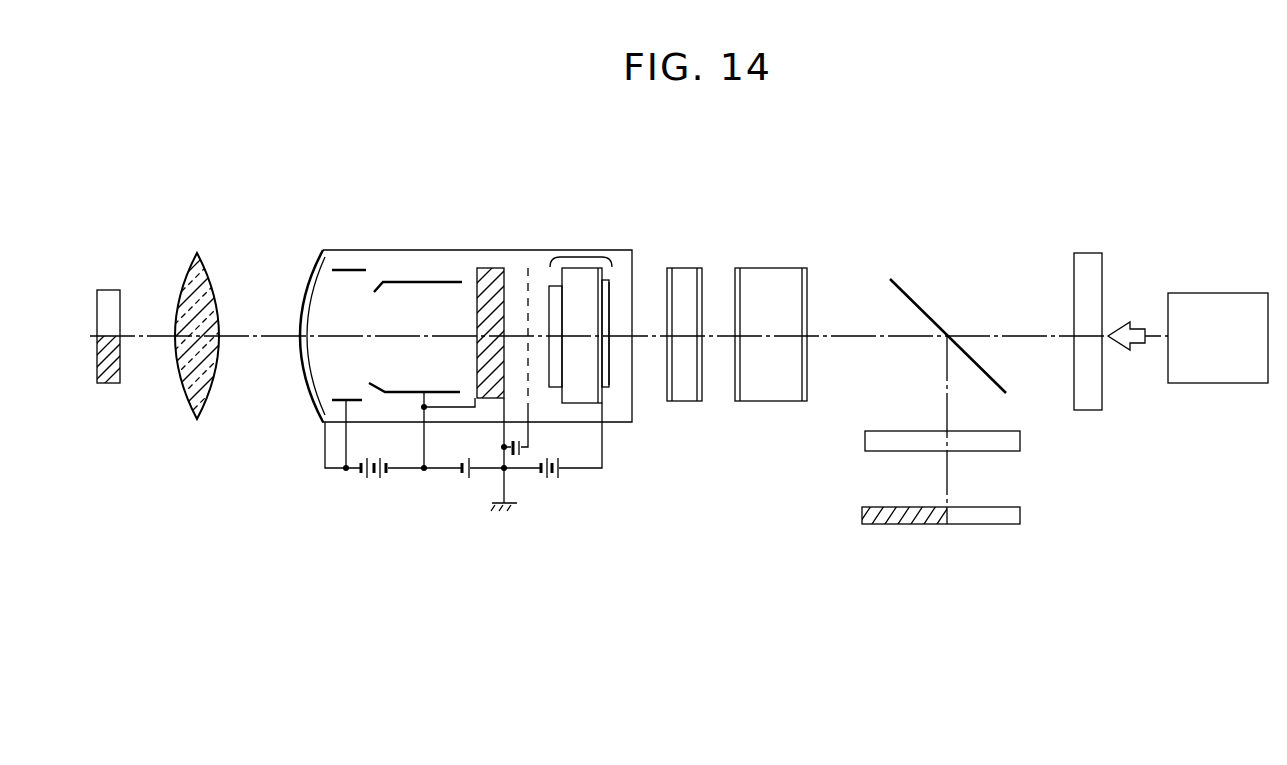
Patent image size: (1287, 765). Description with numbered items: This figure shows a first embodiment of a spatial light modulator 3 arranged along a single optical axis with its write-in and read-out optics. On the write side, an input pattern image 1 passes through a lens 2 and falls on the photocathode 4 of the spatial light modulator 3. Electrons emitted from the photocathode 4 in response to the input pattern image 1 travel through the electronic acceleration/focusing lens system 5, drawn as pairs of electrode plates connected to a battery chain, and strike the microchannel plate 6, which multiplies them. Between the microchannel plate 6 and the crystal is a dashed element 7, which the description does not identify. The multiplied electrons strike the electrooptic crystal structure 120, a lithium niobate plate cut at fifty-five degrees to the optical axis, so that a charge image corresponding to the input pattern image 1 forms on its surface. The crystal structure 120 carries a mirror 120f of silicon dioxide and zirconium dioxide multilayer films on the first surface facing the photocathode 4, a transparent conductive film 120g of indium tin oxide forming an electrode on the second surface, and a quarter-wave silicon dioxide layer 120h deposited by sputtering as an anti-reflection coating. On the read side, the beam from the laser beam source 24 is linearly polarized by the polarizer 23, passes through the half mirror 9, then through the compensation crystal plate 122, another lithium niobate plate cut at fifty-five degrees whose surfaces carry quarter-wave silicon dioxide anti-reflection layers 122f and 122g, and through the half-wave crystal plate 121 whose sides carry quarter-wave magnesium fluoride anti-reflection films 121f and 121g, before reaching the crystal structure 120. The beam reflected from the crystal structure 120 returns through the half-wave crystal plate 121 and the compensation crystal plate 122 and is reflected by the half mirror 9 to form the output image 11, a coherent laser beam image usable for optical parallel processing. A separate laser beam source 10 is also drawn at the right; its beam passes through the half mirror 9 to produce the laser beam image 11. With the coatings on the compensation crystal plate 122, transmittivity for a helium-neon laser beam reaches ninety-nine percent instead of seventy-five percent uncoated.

The input pattern image 1 is at (113, 290).
The lens 2 is at (210, 277).
The spatial light modulator 3 is at (443, 250).
The photocathode 4 is at (331, 262).
The electronic acceleration/focusing lens system 5 is at (442, 271).
The microchannel plate 6 is at (485, 268).
The transparent electrode 7 is at (526, 268).
The half mirror 9 is at (913, 301).
The laser beam source 10 is at (1188, 293).
The output image 11 is at (1020, 516).
The polarizer 23 is at (1091, 253).
The laser beam source 24 is at (1020, 443).
The electrooptic crystal structure 120 is at (578, 250).
The mirror 120f is at (551, 285).
The transparent conductive film 120g is at (607, 279).
The SiO2 layer 120h is at (612, 290).
The half-wave crystal plate 121 is at (695, 267).
The MgF2 film 121f is at (670, 401).
The MgF2 film 121g is at (700, 401).
The compensation crystal plate 122 is at (776, 268).
The SiO2 layer 122f is at (738, 401).
The SiO2 layer 122g is at (805, 401).